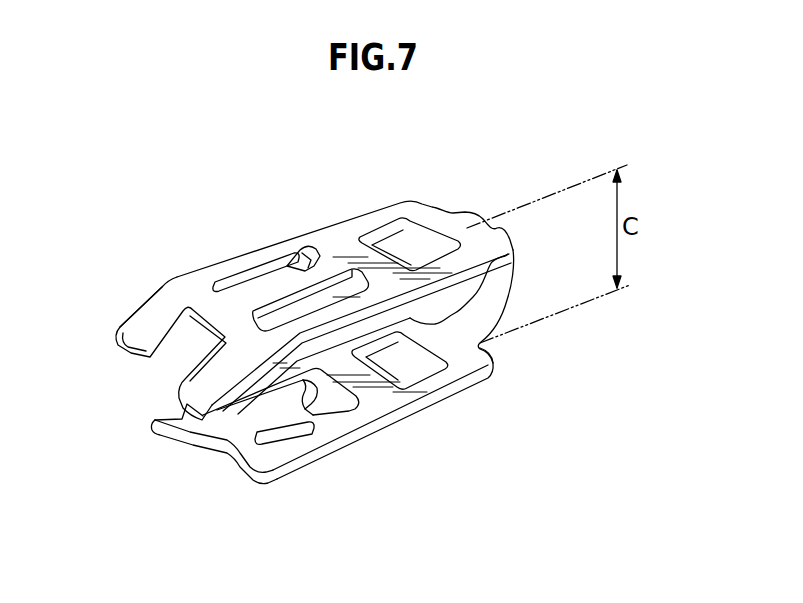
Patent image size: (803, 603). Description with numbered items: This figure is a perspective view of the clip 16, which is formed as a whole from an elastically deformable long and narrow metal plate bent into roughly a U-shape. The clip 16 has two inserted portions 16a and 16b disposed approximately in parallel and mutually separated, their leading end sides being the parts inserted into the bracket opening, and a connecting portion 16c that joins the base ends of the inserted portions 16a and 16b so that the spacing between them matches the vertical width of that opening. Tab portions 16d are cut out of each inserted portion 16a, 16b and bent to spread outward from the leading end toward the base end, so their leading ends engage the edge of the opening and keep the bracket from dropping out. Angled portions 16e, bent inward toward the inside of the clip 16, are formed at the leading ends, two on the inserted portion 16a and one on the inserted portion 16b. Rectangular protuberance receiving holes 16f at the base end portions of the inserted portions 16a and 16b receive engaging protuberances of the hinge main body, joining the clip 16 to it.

The clip 16 is at (340, 216).
The inserted portion 16a is at (227, 266).
The inserted portion 16b is at (383, 407).
The connecting portion 16c is at (508, 293).
The tab portion 16d is at (293, 263).
The angled portion 16e is at (187, 391).
The protuberance receiving hole 16f is at (411, 245).